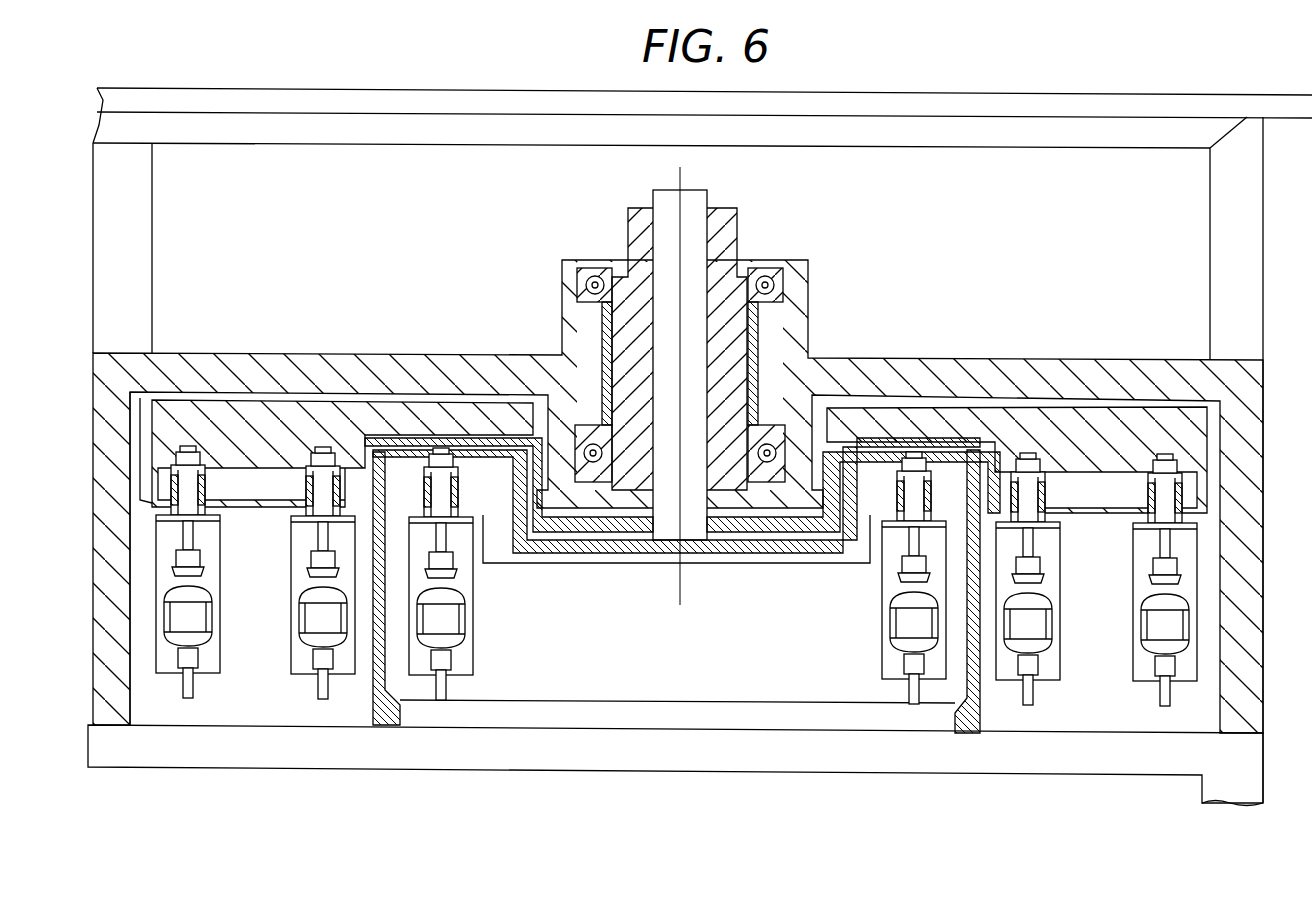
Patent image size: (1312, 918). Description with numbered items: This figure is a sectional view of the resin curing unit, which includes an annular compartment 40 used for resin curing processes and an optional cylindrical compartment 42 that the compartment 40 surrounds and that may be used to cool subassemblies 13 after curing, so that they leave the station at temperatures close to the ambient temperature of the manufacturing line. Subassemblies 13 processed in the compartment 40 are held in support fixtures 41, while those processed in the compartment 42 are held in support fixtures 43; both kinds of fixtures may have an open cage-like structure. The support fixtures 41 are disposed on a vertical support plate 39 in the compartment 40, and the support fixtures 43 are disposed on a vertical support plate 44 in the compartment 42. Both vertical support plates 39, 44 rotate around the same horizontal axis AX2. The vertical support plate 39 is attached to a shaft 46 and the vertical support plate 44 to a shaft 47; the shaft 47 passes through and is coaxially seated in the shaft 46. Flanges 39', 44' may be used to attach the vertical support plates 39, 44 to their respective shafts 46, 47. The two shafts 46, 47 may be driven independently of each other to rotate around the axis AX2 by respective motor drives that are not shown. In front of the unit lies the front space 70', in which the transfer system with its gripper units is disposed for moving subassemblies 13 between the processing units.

The subassembly 13 is at (205, 617).
The vertical support plate 39 is at (679, 412).
The flange 39' is at (680, 376).
The compartment 40 is at (226, 707).
The support fixture 41 is at (290, 637).
The cylindrical compartment 42 is at (535, 687).
The support fixture 43 is at (473, 588).
The vertical support plate 44 is at (676, 532).
The flange 44' is at (682, 532).
The shaft 46 is at (632, 212).
The shaft 47 is at (696, 257).
The front space 70' is at (702, 459).
The horizontal axis AX2 is at (688, 205).